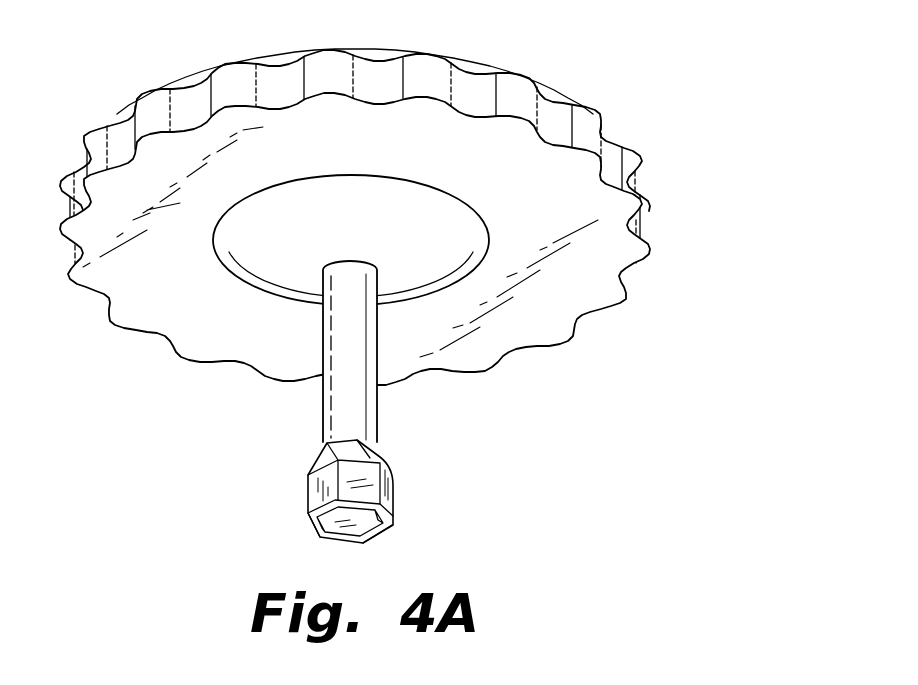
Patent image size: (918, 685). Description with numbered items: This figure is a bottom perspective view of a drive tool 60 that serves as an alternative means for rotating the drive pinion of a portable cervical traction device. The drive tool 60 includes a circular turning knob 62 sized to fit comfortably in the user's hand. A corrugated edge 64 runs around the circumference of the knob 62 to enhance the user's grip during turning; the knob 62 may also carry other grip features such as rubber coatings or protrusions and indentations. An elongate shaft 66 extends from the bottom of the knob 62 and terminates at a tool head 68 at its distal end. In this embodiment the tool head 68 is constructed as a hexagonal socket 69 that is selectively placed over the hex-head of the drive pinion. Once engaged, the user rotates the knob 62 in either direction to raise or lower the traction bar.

The drive tool 60 is at (755, 120).
The turning knob 62 is at (395, 202).
The corrugated edge 64 is at (630, 180).
The elongate shaft 66 is at (367, 410).
The tool head 68 is at (401, 505).
The hexagonal socket 69 is at (388, 549).